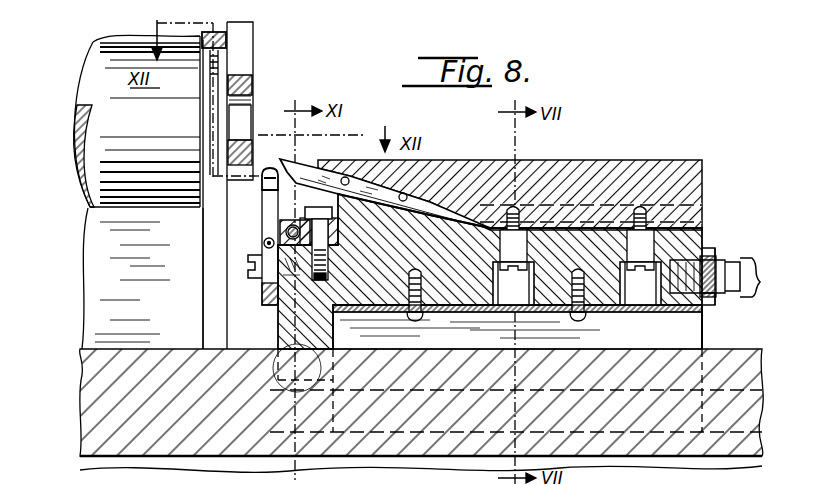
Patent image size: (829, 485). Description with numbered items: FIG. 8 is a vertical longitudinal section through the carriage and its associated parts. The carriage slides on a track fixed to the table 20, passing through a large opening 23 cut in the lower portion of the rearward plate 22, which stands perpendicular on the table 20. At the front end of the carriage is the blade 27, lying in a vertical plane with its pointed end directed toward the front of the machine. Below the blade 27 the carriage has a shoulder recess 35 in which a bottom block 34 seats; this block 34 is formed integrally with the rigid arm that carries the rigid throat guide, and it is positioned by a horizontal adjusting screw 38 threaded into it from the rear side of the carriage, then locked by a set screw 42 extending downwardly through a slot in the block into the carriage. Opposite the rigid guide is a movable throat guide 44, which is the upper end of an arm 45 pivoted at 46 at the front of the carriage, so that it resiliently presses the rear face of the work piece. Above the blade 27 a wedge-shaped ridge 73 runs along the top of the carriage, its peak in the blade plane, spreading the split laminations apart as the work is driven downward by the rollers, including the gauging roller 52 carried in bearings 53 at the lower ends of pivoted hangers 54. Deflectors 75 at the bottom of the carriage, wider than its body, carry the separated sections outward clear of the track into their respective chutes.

The table 20 is at (757, 435).
The rearward plate 22 is at (210, 325).
The opening 23 is at (226, 48).
The blade 27 is at (358, 178).
The bottom block 34 is at (330, 222).
The shoulder recess 35 is at (336, 330).
The adjusting screw 38 is at (280, 232).
The set screw 42 is at (322, 206).
The movable throat guide 44 is at (264, 185).
The arm 45 is at (262, 205).
The pivot 46 is at (248, 273).
The gauging roller 52 is at (78, 182).
The bearings 53 is at (251, 97).
The hangers 54 is at (255, 62).
The wedge-shaped ridge 73 is at (668, 162).
The deflectors 75 is at (692, 328).